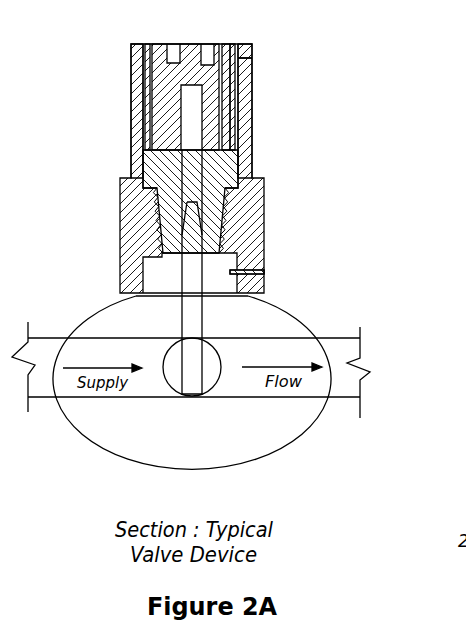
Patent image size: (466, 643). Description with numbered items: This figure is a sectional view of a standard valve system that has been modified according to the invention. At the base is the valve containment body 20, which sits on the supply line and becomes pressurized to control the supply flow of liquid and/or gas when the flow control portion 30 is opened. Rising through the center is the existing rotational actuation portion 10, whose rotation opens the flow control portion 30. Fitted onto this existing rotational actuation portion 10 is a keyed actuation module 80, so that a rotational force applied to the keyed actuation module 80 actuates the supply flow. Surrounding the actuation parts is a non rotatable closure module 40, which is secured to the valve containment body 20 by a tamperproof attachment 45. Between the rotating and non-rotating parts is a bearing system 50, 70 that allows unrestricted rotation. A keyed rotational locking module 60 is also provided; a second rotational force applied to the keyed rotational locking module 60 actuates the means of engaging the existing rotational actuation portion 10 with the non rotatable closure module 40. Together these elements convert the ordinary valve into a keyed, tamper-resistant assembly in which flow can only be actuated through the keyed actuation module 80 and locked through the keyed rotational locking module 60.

The rotational actuation portion 10 is at (193, 313).
The valve containment body 20 is at (165, 276).
The flow control portion 30 is at (210, 374).
The non rotatable closure module 40 is at (257, 212).
The tamperproof attachment 45 is at (264, 272).
The bearing system 50 is at (230, 138).
The keyed rotational locking module 60 is at (215, 164).
The bearing system 70 is at (222, 116).
The keyed actuation module 80 is at (205, 74).